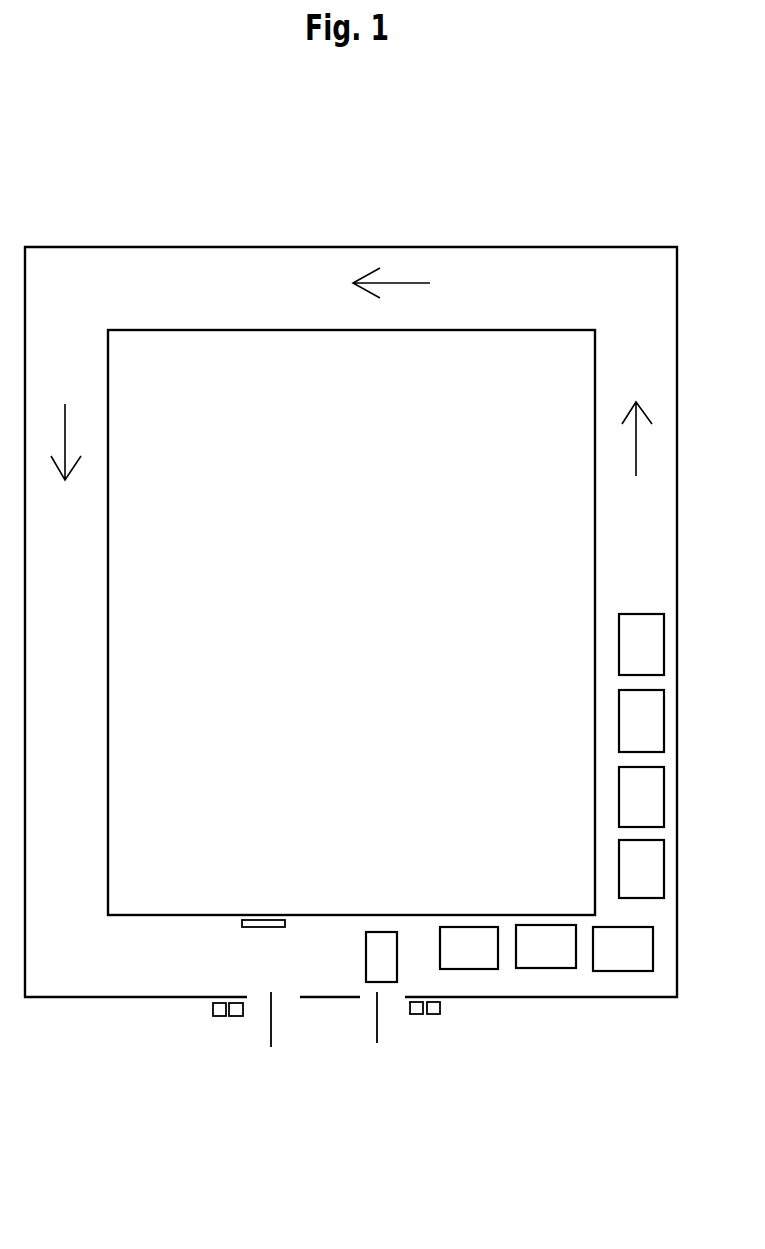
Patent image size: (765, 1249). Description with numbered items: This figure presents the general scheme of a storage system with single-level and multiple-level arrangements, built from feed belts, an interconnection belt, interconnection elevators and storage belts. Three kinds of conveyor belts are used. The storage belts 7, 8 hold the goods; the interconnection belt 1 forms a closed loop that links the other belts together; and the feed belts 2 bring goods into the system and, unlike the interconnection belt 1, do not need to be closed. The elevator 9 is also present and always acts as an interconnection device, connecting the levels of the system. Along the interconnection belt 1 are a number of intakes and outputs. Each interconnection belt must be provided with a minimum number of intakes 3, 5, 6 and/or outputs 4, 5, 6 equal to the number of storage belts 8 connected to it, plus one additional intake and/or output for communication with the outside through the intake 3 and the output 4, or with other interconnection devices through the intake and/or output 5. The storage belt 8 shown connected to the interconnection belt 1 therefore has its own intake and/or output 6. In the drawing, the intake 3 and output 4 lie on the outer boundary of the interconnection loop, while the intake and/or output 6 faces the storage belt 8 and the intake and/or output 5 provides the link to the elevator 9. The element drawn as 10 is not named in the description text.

The interconnection belt 1 is at (351, 622).
The feed belt 2 is at (469, 948).
The intake 3 is at (375, 1035).
The output 4 is at (418, 1013).
The intake and/or output for other interconnection devices 5 is at (438, 1013).
The intake and/or output 6 is at (377, 948).
The storage belt 7 is at (271, 1035).
The storage belt connected to the interconnection belt 8 is at (238, 1016).
The elevator 9 is at (218, 1016).
The reading device 10 is at (265, 920).